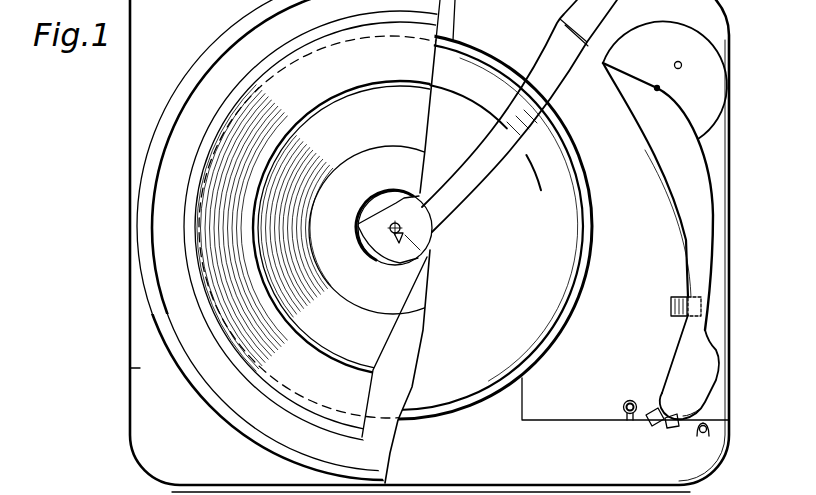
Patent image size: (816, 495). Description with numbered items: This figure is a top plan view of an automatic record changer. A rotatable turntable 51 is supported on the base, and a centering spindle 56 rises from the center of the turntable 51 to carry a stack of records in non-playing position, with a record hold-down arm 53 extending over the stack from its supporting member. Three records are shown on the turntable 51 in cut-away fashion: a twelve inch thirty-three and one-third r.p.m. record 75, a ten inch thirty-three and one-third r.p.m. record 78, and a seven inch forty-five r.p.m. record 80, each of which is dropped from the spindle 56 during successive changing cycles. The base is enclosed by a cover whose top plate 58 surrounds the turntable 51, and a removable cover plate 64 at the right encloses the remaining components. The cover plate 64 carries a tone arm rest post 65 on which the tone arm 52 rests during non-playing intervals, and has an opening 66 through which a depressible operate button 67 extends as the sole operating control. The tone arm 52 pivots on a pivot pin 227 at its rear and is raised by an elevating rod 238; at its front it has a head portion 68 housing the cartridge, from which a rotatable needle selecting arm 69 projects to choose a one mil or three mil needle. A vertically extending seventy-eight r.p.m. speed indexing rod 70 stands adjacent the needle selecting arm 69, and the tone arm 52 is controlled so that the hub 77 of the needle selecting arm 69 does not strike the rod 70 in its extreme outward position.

The turntable 51 is at (575, 228).
The tone arm 52 is at (704, 231).
The record hold-down arm 53 is at (557, 90).
The centering spindle 56 is at (378, 203).
The top plate 58 is at (688, 467).
The removable cover plate 64 is at (723, 312).
The tone arm rest post 65 is at (672, 315).
The opening 66 is at (623, 405).
The depressible operate button 67 is at (627, 415).
The head portion 68 is at (701, 357).
The needle selecting arm 69 is at (656, 421).
The 78 r.p.m. speed indexing rod 70 is at (702, 434).
The twelve inch 33⅓ r.p.m. record 75 is at (372, 442).
The hub 77 is at (675, 428).
The ten inch 33⅓ r.p.m. record 78 is at (370, 378).
The seven inch 45 r.p.m. record 80 is at (397, 322).
The pivot pin 227 is at (677, 61).
The elevating rod 238 is at (657, 91).